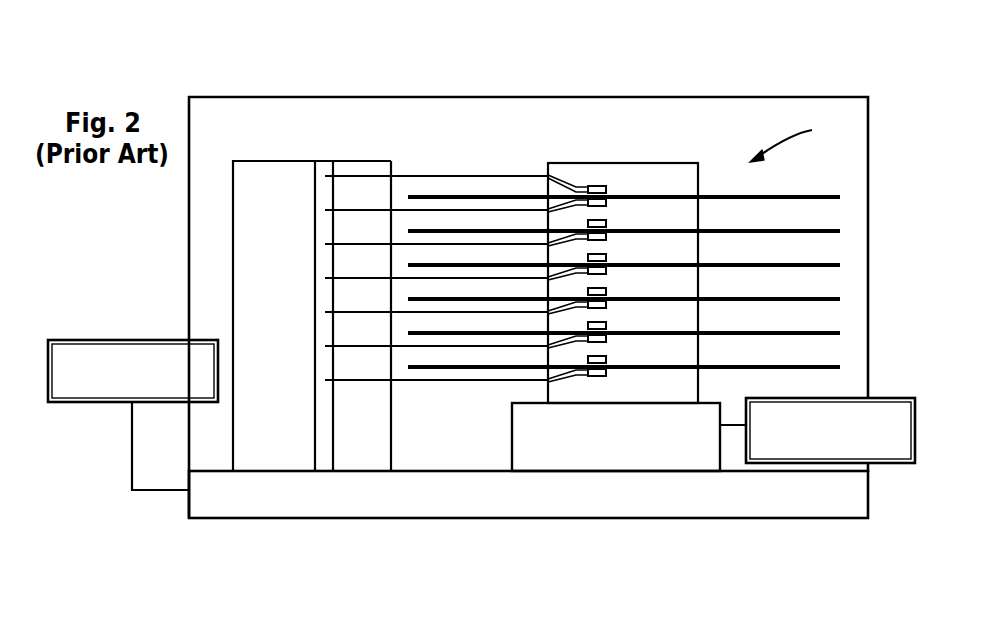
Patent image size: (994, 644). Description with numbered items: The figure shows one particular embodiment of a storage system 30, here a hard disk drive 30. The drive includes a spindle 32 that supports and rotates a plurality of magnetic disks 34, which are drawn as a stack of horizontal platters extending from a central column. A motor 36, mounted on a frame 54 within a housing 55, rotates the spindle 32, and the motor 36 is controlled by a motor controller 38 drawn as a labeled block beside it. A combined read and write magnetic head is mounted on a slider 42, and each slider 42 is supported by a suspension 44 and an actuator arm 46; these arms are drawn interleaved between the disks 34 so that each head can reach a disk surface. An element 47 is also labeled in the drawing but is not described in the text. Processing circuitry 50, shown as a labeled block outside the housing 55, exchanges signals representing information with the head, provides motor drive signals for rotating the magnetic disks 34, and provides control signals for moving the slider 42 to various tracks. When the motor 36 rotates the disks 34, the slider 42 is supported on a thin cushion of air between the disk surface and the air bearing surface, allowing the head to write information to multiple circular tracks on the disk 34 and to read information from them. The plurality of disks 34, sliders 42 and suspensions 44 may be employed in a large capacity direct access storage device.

The storage system 30 is at (798, 140).
The spindle 32 is at (676, 163).
The magnetic disks 34 is at (816, 199).
The motor 36 is at (608, 451).
The motor controller 38 is at (900, 464).
The slider 42 is at (600, 184).
The suspension 44 is at (560, 184).
The actuator arm 46 is at (498, 215).
The spindle housing 47 is at (282, 161).
The processing circuitry 50 is at (113, 340).
The frame 54 is at (307, 519).
The housing 55 is at (713, 97).